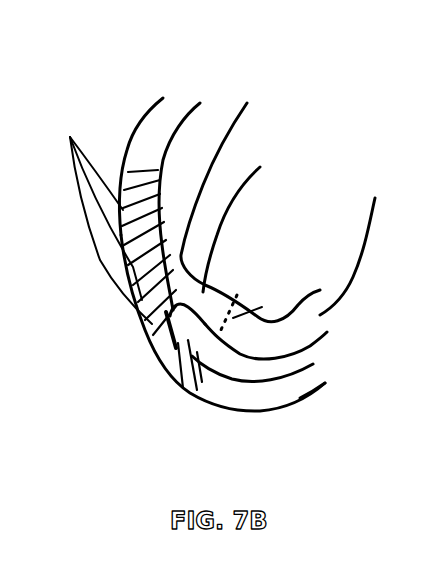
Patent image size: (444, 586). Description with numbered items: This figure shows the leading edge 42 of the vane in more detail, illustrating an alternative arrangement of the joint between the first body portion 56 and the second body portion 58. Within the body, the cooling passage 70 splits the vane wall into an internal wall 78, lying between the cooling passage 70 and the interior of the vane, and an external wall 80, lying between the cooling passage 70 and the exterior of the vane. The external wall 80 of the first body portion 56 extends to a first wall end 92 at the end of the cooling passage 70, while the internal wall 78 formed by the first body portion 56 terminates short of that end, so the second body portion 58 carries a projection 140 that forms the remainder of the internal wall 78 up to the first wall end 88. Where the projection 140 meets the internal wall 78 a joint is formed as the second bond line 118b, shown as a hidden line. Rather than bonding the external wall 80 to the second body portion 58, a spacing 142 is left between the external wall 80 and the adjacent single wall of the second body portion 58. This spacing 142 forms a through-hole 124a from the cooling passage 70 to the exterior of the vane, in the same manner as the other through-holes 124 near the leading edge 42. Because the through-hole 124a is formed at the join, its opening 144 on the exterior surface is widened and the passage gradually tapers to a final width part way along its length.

The leading edge 42 is at (120, 101).
The second body portion 58 is at (172, 115).
The through-holes 124 is at (127, 172).
The through-hole 124a is at (163, 331).
The opening 144 is at (160, 357).
The cooling passage 70 is at (310, 352).
The external wall 80 is at (310, 373).
The first wall end 92 is at (176, 373).
The spacing 142 is at (250, 197).
The projection 140 is at (250, 217).
The second bond line 118b is at (237, 295).
The first wall end 88 is at (262, 307).
The internal wall 78 is at (375, 198).
The first body portion 56 is at (307, 396).